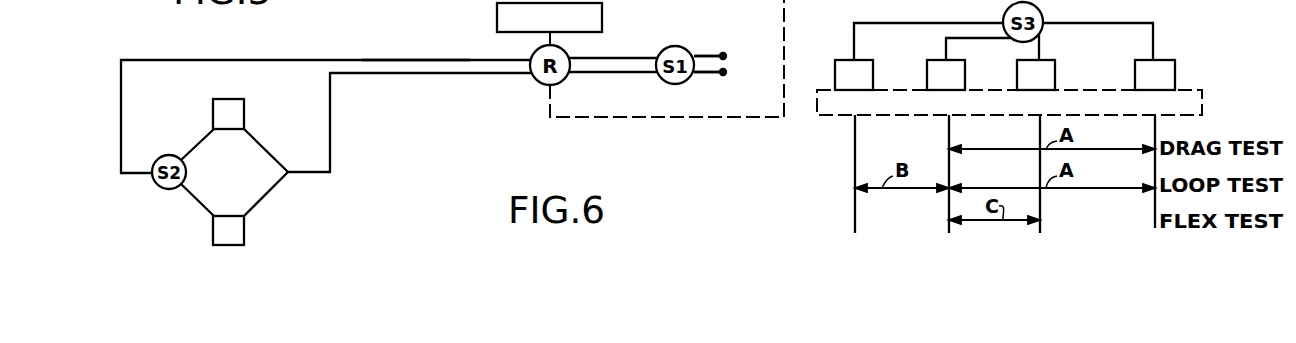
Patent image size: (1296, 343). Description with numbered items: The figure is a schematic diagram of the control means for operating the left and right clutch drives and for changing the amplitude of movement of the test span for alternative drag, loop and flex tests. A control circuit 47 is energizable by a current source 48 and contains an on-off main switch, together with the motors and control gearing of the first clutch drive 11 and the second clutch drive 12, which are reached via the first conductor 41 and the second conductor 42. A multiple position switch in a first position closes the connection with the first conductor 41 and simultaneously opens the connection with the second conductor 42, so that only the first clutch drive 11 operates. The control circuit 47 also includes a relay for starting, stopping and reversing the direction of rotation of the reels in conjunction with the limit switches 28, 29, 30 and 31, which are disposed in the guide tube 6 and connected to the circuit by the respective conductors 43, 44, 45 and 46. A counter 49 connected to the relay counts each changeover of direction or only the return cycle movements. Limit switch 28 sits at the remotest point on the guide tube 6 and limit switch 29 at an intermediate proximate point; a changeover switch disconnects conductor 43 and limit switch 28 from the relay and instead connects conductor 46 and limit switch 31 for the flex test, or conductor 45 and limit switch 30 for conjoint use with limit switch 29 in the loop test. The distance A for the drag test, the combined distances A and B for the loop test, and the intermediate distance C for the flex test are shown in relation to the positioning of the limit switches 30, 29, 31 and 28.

The guide tube 6 is at (1195, 101).
The first clutch drive 11 is at (228, 114).
The second clutch drive 12 is at (228, 230).
The limit switch 28 is at (1155, 75).
The limit switch 29 is at (946, 75).
The limit switch 30 is at (854, 75).
The limit switch 31 is at (1036, 75).
The first conductor 41 is at (196, 142).
The second conductor 42 is at (200, 210).
The conductor 43 is at (1153, 46).
The conductor 44 is at (946, 48).
The conductor 45 is at (877, 23).
The conductor 46 is at (1043, 42).
The control circuit 47 is at (362, 57).
The current source 48 is at (704, 55).
The counter 49 is at (603, 28).